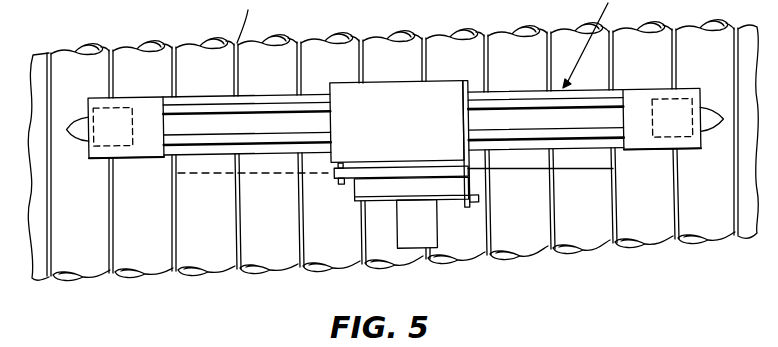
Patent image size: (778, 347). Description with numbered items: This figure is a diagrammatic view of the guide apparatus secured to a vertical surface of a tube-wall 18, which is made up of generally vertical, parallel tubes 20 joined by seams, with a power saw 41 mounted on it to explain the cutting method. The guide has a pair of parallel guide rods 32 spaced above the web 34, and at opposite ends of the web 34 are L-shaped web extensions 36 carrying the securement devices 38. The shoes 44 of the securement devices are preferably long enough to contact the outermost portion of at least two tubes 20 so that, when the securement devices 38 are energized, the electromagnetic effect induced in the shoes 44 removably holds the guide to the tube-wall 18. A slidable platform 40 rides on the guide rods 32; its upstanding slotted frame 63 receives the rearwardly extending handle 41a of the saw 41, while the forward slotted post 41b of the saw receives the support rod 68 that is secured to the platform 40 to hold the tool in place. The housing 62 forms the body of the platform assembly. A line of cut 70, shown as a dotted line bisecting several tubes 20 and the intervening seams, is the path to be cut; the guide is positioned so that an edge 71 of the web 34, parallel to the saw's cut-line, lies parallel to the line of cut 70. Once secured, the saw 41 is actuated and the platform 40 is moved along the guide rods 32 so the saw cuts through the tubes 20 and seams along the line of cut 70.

The tube-wall 18 is at (112, 5).
The tubes 20 is at (192, 47).
The slidable platform 40 is at (392, 128).
The housing 62 is at (403, 117).
The upstanding slotted frame 63 is at (460, 148).
The support rod 68 is at (340, 183).
The power saw 41 is at (390, 208).
The handle 41a is at (477, 199).
The forward slotted post 41b is at (350, 183).
The edge 71 is at (522, 152).
The guide rods 32 is at (600, 133).
The web 34 is at (522, 90).
The L-shaped web extensions 36 is at (145, 160).
The securement devices 38 is at (88, 165).
The shoes 44 is at (72, 122).
The line of cut 70 is at (202, 175).